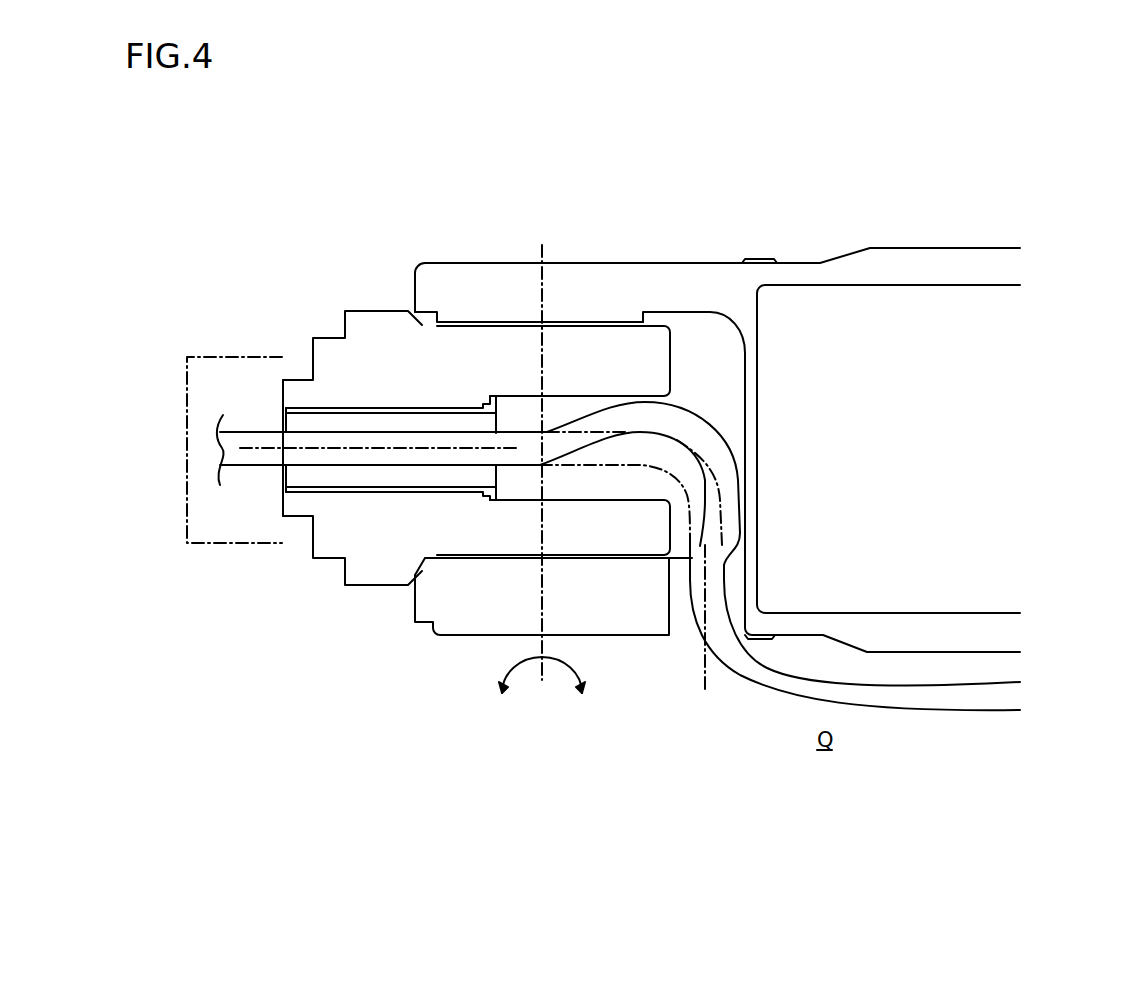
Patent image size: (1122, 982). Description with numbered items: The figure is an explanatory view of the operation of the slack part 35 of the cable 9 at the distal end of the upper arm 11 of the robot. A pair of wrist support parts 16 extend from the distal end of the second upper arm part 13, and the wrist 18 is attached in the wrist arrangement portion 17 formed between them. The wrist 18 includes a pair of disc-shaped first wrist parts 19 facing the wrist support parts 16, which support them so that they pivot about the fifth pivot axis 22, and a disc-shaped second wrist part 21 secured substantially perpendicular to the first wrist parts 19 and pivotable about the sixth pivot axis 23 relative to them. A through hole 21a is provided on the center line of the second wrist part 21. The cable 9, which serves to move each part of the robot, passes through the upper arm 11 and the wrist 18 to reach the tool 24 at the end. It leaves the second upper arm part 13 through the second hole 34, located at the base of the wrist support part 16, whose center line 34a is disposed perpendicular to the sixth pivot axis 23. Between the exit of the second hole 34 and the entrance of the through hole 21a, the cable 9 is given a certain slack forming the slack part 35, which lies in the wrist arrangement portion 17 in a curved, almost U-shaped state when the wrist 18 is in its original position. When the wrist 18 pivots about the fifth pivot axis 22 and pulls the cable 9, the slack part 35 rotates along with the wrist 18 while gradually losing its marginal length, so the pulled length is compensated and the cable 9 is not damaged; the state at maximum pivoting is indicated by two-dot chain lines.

The cable 9 is at (905, 697).
The upper arm 11 is at (947, 208).
The second upper arm part 13 is at (965, 245).
The wrist support parts 16 is at (482, 287).
The wrist arrangement portion 17 is at (710, 355).
The wrist 18 is at (345, 279).
The first wrist parts 19 is at (593, 358).
The second wrist part 21 is at (328, 362).
The through hole 21a is at (405, 466).
The fifth pivot axis 22 is at (545, 613).
The sixth pivot axis 23 is at (262, 450).
The tool 24 is at (217, 357).
The second hole 34 is at (668, 598).
The center line 34a is at (705, 690).
The slack part 35 is at (713, 437).